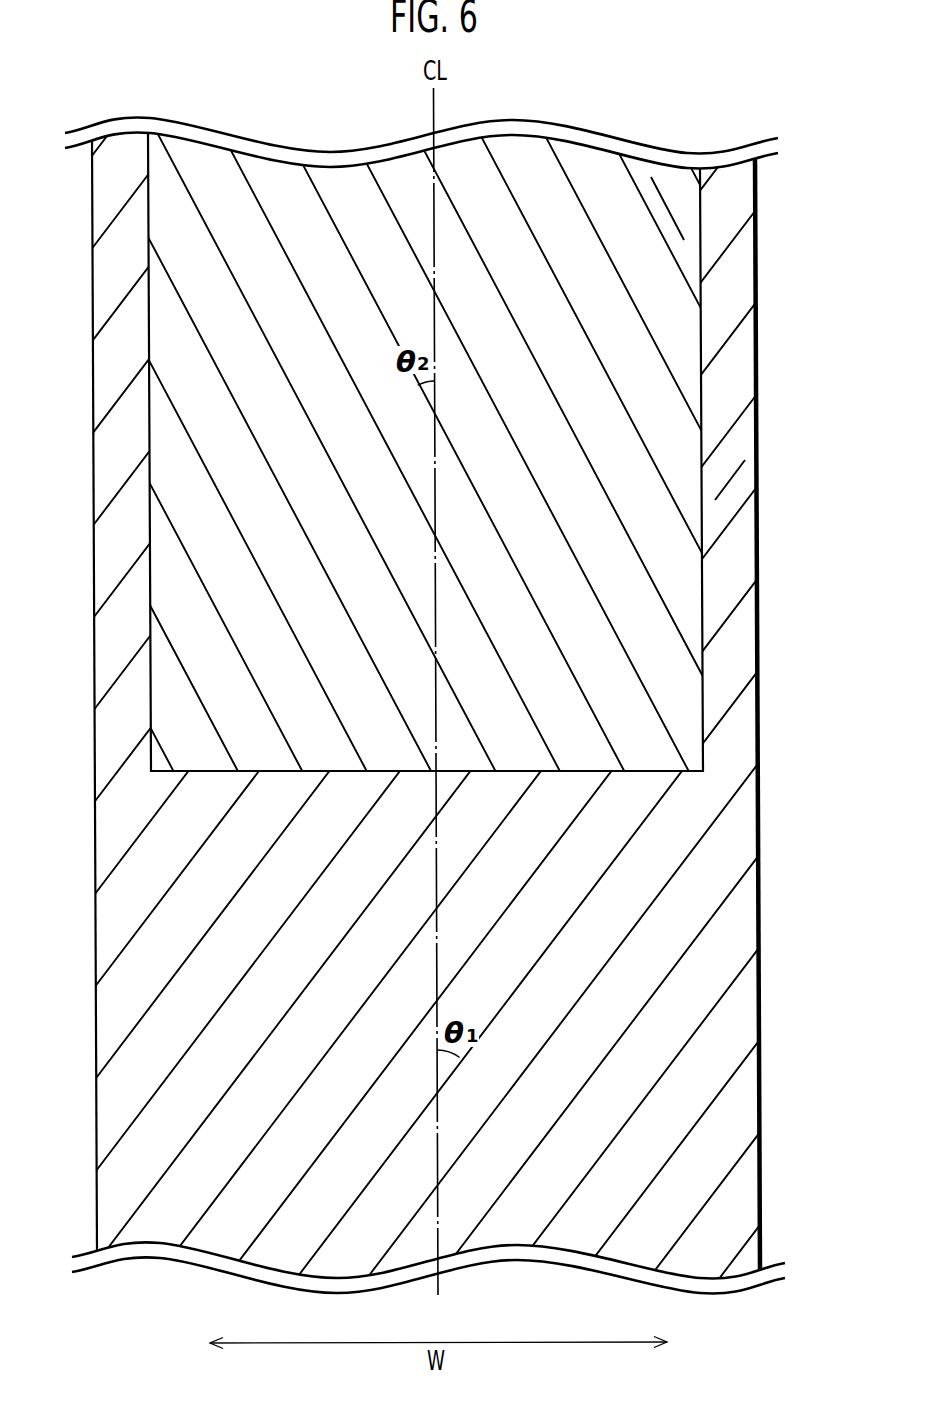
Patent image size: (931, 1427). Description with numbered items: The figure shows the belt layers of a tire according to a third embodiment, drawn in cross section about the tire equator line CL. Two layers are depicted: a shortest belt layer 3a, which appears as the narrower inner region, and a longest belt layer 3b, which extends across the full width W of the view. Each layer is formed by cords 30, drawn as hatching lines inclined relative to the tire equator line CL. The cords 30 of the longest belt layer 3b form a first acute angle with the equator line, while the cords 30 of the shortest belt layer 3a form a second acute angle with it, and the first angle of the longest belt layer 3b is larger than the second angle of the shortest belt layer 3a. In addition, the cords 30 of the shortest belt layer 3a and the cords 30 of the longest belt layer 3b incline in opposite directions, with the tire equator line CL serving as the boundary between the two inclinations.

The cord 30 is at (663, 240).
The shortest belt layer 3a is at (675, 307).
The longest belt layer 3b is at (740, 458).